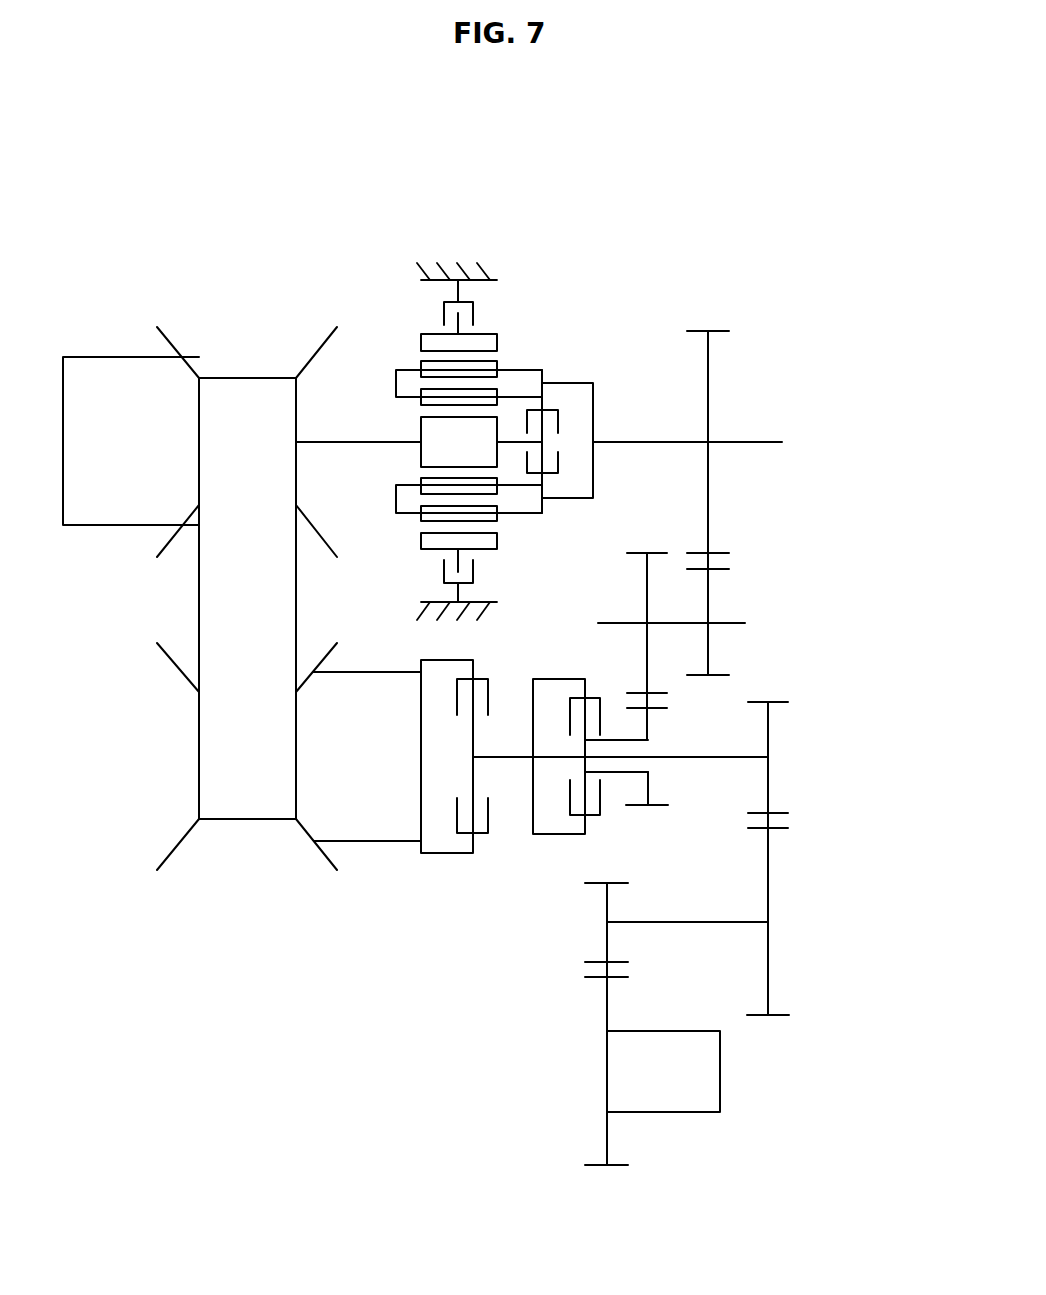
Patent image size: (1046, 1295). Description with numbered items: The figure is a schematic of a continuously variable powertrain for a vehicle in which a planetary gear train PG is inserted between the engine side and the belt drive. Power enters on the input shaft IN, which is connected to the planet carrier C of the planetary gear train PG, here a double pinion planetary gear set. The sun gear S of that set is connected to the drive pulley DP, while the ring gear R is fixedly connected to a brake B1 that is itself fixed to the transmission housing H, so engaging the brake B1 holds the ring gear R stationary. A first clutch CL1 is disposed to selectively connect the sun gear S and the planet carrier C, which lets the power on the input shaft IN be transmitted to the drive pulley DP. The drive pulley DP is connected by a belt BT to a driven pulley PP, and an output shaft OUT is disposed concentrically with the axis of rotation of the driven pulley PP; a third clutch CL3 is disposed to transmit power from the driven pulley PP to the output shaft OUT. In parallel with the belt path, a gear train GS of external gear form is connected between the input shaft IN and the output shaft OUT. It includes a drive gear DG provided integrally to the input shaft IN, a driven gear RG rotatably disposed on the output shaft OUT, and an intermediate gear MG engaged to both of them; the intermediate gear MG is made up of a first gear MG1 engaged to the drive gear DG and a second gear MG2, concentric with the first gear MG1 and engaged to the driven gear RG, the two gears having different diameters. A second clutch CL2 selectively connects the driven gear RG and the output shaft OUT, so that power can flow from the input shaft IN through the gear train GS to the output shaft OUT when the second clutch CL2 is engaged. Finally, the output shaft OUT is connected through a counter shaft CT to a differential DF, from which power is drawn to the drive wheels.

The drive pulley DP is at (170, 343).
The belt BT is at (211, 593).
The driven pulley PP is at (175, 848).
The transmission housing H is at (447, 270).
The brake B1 is at (432, 302).
The planetary gear train PG is at (407, 351).
The ring gear R is at (497, 333).
The planet carrier C is at (396, 385).
The sun gear S is at (428, 453).
The first clutch CL1 is at (560, 401).
The gear train GS is at (714, 321).
The input shaft IN is at (748, 442).
The drive gear DG is at (719, 553).
The intermediate gear MG is at (875, 595).
The first gear MG1 is at (719, 569).
The second gear MG2 is at (662, 693).
The output shaft OUT is at (732, 757).
The driven gear RG is at (657, 805).
The third clutch CL3 is at (448, 838).
The second clutch CL2 is at (558, 830).
The counter shaft CT is at (768, 921).
The differential DF is at (720, 1077).